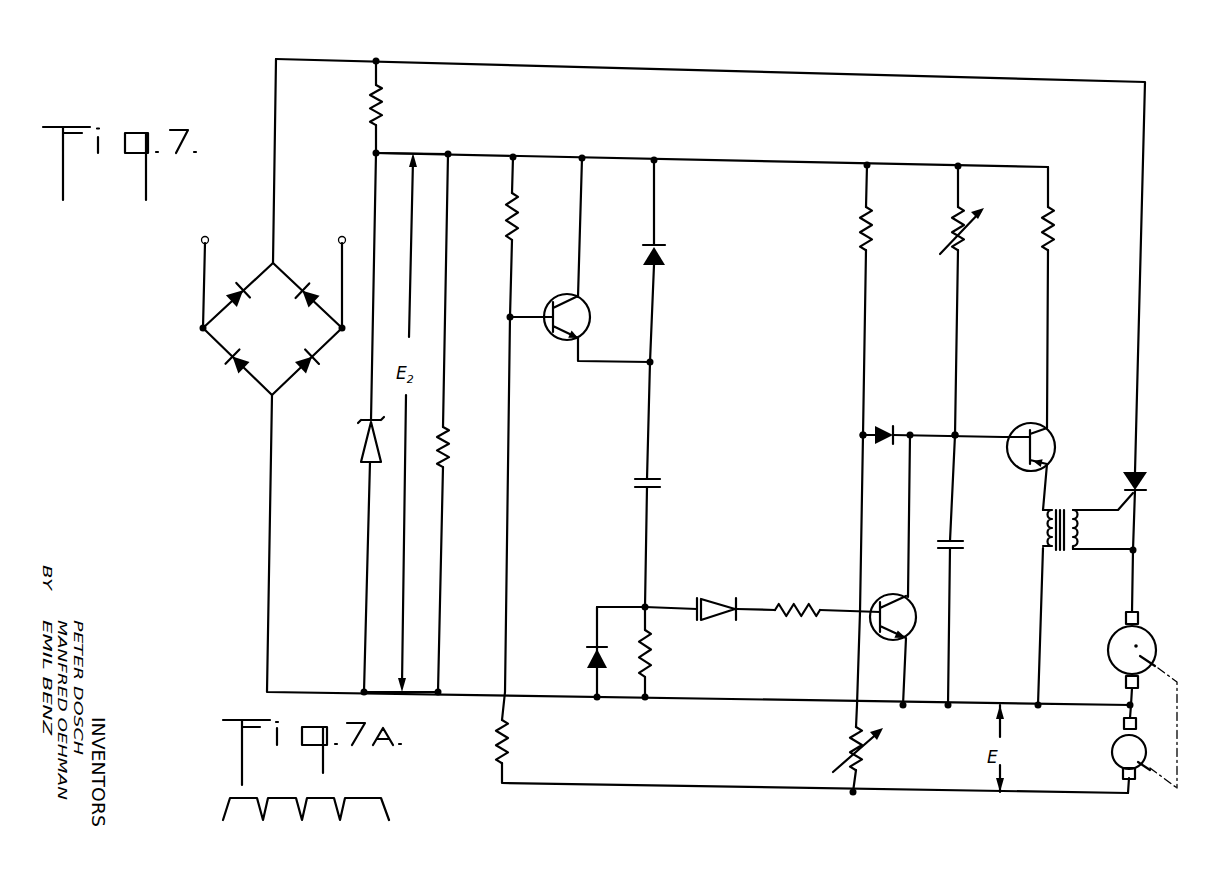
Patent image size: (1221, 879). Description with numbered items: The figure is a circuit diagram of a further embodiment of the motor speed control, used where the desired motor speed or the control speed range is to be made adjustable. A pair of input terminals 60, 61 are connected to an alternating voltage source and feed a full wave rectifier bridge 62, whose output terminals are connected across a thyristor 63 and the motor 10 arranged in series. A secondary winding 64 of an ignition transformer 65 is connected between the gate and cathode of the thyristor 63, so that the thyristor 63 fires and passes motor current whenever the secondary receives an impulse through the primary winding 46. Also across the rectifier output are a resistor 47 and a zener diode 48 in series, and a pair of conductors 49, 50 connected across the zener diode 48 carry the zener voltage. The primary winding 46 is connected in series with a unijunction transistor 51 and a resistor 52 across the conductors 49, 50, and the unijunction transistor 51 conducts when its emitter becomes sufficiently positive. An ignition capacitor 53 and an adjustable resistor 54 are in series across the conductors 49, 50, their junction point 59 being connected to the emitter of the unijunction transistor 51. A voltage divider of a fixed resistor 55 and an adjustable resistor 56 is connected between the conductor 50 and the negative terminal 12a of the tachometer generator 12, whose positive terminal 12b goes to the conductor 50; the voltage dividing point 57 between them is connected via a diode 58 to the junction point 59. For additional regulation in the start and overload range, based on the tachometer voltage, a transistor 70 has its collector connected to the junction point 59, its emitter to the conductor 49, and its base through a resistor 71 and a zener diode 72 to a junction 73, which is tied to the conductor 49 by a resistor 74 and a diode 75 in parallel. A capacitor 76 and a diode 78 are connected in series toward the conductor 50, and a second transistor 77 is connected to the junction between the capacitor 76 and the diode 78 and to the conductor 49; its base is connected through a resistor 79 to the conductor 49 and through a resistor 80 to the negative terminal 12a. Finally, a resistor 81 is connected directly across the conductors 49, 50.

The motor 10 is at (1150, 632).
The tachometer generator 12 is at (1110, 752).
The negative terminal of the tachometer generator 12a is at (1118, 770).
The positive terminal of the tachometer generator 12b is at (1120, 728).
The primary winding 46 is at (1040, 530).
The resistor 47 is at (373, 118).
The zener diode 48 is at (358, 448).
The conductor 49 is at (482, 148).
The conductor 50 is at (466, 695).
The unijunction transistor 51 is at (1053, 430).
The resistor 52 is at (1058, 245).
The ignition capacitor 53 is at (978, 553).
The adjustable resistor 54 is at (968, 240).
The fixed resistor 55 is at (860, 240).
The adjustable resistor 56 is at (840, 745).
The voltage dividing point 57 is at (860, 435).
The diode 58 is at (886, 428).
The junction point 59 is at (957, 435).
The input terminal 60 is at (201, 240).
The input terminal 61 is at (338, 240).
The full wave rectifier bridge 62 is at (221, 380).
The thyristor 63 is at (1147, 471).
The secondary winding 64 is at (1083, 540).
The ignition transformer 65 is at (1071, 502).
The transistor 70 is at (893, 595).
The resistor 71 is at (799, 600).
The zener diode 72 is at (726, 600).
The junction 73 is at (640, 605).
The resistor 74 is at (660, 655).
The diode 75 is at (580, 655).
The capacitor 76 is at (668, 478).
The second transistor 77 is at (558, 290).
The diode 78 is at (661, 245).
The resistor 79 is at (522, 220).
The resistor 80 is at (517, 736).
The resistor 81 is at (452, 430).